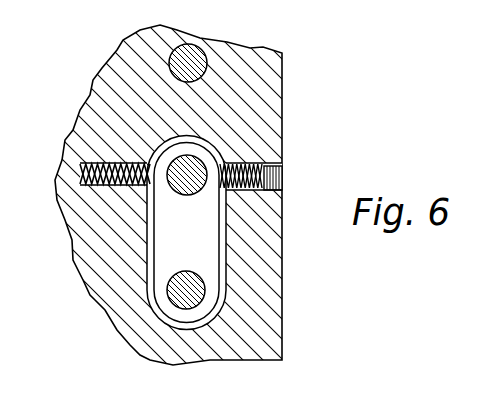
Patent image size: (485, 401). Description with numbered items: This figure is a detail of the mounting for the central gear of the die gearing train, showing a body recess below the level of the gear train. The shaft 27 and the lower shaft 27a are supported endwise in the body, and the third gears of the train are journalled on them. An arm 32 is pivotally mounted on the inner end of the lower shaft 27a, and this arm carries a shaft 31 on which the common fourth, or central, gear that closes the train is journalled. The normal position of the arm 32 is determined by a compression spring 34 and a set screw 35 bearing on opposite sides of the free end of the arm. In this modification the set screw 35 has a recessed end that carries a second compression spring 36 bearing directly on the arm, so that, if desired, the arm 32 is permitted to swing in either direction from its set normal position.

The shaft 27 is at (193, 60).
The lower shaft 27a is at (175, 292).
The shaft 31 is at (195, 190).
The arm 32 is at (207, 260).
The compression spring 34 is at (105, 160).
The set screw 35 is at (283, 183).
The second compression spring 36 is at (240, 160).